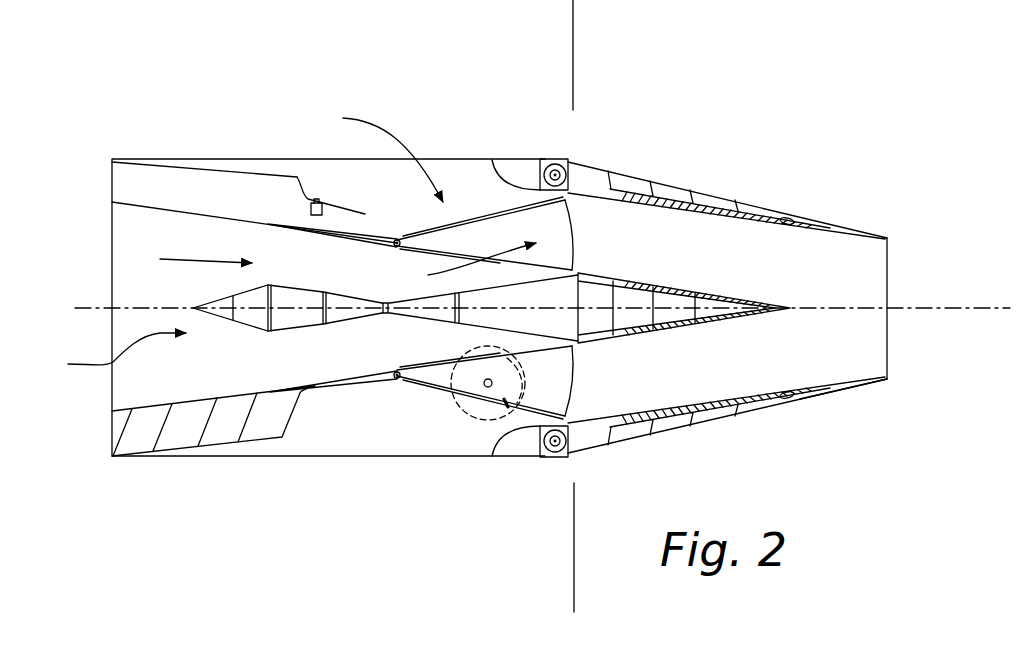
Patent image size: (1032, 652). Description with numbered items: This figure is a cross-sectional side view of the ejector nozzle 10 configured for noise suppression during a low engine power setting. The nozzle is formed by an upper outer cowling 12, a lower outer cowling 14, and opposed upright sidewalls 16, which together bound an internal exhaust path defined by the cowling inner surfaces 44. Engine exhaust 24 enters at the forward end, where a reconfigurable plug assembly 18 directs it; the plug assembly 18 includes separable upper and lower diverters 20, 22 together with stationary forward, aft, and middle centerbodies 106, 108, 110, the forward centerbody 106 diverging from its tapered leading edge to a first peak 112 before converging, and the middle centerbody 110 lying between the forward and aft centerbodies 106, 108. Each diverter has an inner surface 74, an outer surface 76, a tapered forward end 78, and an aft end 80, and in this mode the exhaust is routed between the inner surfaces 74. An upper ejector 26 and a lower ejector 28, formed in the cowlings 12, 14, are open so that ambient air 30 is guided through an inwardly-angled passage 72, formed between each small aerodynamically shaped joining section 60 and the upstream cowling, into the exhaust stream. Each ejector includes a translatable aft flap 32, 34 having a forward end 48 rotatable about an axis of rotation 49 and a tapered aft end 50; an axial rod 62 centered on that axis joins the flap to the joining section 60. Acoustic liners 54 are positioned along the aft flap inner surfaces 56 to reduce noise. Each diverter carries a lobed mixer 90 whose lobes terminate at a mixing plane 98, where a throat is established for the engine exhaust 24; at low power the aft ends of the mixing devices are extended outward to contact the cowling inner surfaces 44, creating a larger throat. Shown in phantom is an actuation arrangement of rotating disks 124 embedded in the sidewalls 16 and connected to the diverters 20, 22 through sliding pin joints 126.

The ejector nozzle 10 is at (476, 84).
The upper outer cowling 12 is at (155, 187).
The lower outer cowling 14 is at (208, 437).
The nozzle sidewalls 16 is at (838, 260).
The reconfigurable plug assembly 18 is at (114, 355).
The upper diverter 20 is at (357, 243).
The lower diverter 22 is at (327, 373).
The engine exhaust 24 is at (200, 263).
The upper ejector 26 is at (546, 153).
The lower ejector 28 is at (553, 466).
The ambient air 30 is at (380, 117).
The upper translatable aft flap 32 is at (672, 195).
The lower translatable aft flap 34 is at (701, 428).
The cowling inner surfaces 44 is at (365, 214).
The aft flap forward end 48 is at (583, 455).
The axis of rotation 49 is at (605, 180).
The tapered aft end 50 is at (838, 393).
The acoustic liners 54 is at (728, 218).
The aft flap inner surfaces 56 is at (785, 392).
The small joining section 60 is at (512, 452).
The axial rod 62 is at (577, 160).
The inwardly-angled passage 72 is at (327, 178).
The diverter inner surface 74 is at (428, 254).
The diverter outer surface 76 is at (480, 217).
The diverter forward end 78 is at (297, 231).
The diverter aft end 80 is at (573, 369).
The lobed mixer 90 is at (568, 222).
The mixing plane 98 is at (575, 37).
The forward centerbody 106 is at (287, 329).
The aft centerbody 108 is at (596, 300).
The middle centerbody 110 is at (490, 323).
The first peak 112 is at (272, 287).
The rotating disks 124 is at (440, 428).
The sliding pin joints 126 is at (506, 400).